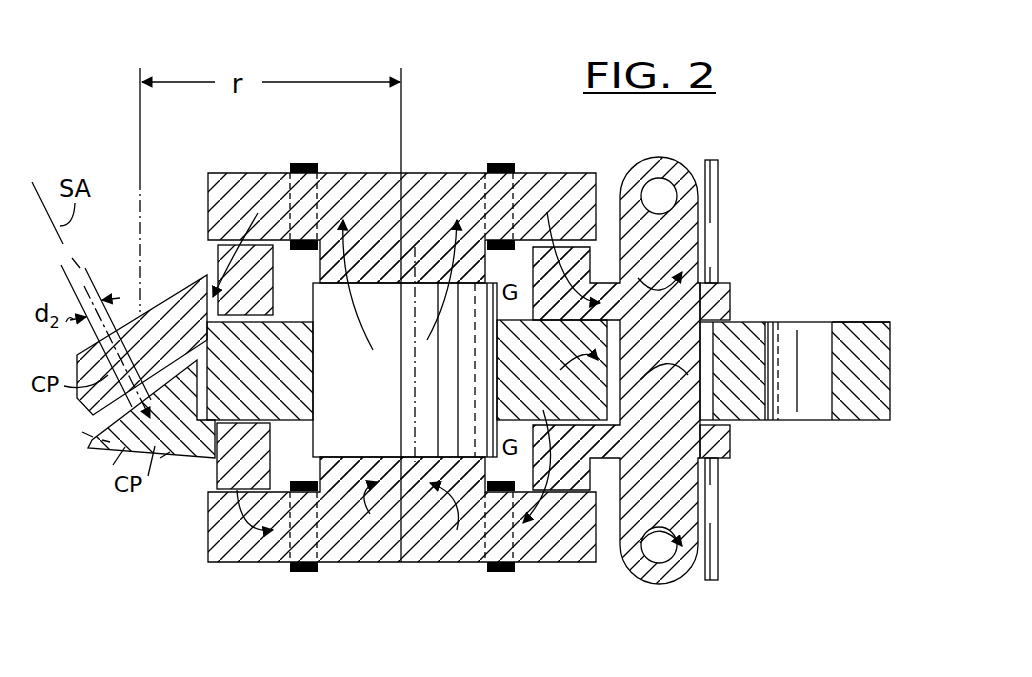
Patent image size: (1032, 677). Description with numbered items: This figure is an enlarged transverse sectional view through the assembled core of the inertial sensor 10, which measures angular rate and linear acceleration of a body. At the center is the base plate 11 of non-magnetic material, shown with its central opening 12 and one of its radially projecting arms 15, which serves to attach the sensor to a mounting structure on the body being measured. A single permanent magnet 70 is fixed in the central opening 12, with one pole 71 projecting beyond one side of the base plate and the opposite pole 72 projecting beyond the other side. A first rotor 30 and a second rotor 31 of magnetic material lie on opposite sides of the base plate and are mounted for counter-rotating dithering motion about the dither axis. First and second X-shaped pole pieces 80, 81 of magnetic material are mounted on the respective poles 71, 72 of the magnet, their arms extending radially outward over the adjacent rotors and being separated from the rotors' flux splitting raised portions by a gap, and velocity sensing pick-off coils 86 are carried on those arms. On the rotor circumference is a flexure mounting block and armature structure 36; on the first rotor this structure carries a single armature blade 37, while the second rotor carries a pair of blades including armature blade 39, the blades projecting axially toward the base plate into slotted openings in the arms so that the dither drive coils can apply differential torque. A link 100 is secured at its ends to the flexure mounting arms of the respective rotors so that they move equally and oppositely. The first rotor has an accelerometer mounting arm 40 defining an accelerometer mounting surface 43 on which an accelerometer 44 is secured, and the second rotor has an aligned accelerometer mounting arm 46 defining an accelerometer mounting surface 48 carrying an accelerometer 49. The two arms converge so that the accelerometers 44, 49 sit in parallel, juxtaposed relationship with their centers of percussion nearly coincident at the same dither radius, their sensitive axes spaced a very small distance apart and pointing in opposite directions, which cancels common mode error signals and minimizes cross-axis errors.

The sensor 10 is at (402, 387).
The base plate 11 is at (795, 383).
The central opening 12 is at (317, 368).
The radially projecting arm 15 is at (843, 422).
The first rotor 30 is at (206, 277).
The second rotor 31 is at (207, 466).
The flexure mounting block and armature structure 36 is at (668, 160).
The armature blade 37 is at (742, 325).
The armature blade 39 is at (722, 292).
The accelerometer mounting arm 40 is at (156, 299).
The accelerometer mounting surface 43 is at (81, 414).
The accelerometer 44 is at (82, 432).
The accelerometer mounting arm 46 is at (160, 460).
The accelerometer mounting surface 48 is at (113, 470).
The accelerometer 49 is at (102, 445).
The permanent magnet 70 is at (410, 437).
The pole 71 is at (311, 293).
The opposite pole 72 is at (318, 466).
The first pole piece 80 is at (423, 172).
The second pole piece 81 is at (432, 566).
The velocity sensing pick-off coil 86 is at (303, 162).
The link 100 is at (720, 184).